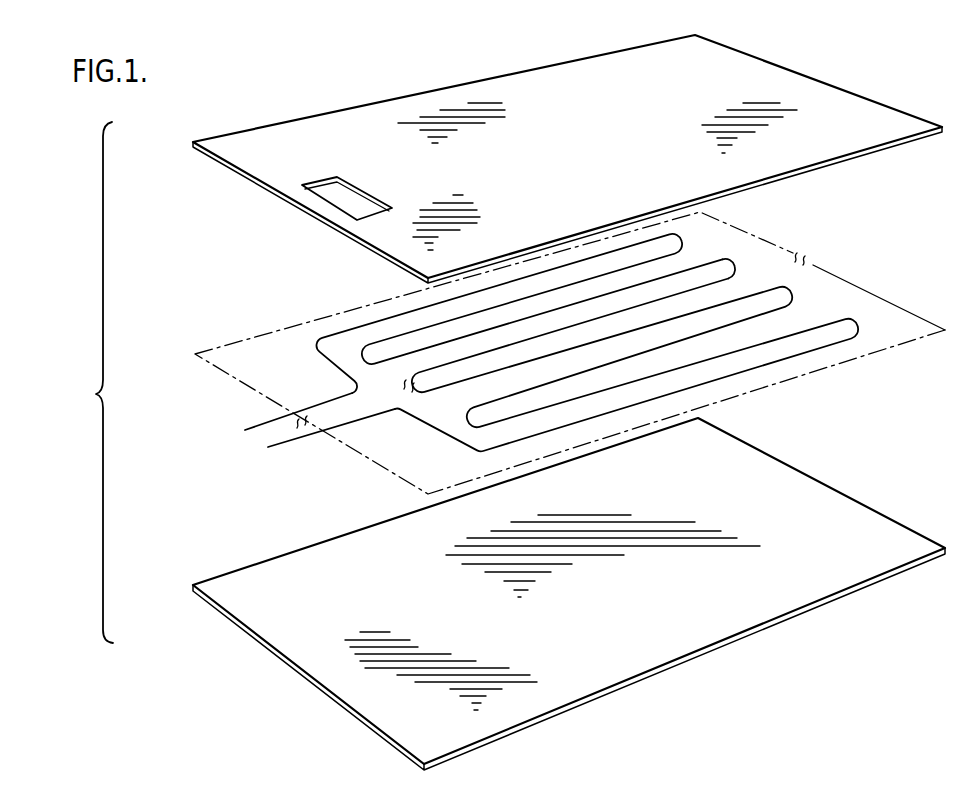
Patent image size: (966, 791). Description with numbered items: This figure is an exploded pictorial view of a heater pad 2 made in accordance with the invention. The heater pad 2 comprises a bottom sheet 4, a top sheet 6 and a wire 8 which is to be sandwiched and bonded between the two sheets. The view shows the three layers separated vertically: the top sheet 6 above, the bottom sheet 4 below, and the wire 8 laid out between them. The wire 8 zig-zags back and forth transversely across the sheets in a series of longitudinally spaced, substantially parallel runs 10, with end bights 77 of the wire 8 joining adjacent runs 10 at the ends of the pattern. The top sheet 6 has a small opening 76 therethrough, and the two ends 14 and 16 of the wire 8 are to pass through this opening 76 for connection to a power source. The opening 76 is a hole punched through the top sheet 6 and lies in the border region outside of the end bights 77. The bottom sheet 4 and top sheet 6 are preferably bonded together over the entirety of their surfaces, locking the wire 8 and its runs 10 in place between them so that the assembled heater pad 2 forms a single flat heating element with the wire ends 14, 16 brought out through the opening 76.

The heater pad 2 is at (94, 382).
The bottom sheet 4 is at (770, 603).
The top sheet 6 is at (579, 83).
The wire 8 is at (247, 328).
The runs 10 is at (388, 343).
The end of the wire 14 is at (264, 423).
The end of the wire 16 is at (291, 444).
The opening 76 is at (333, 198).
The end bights 77 is at (727, 258).